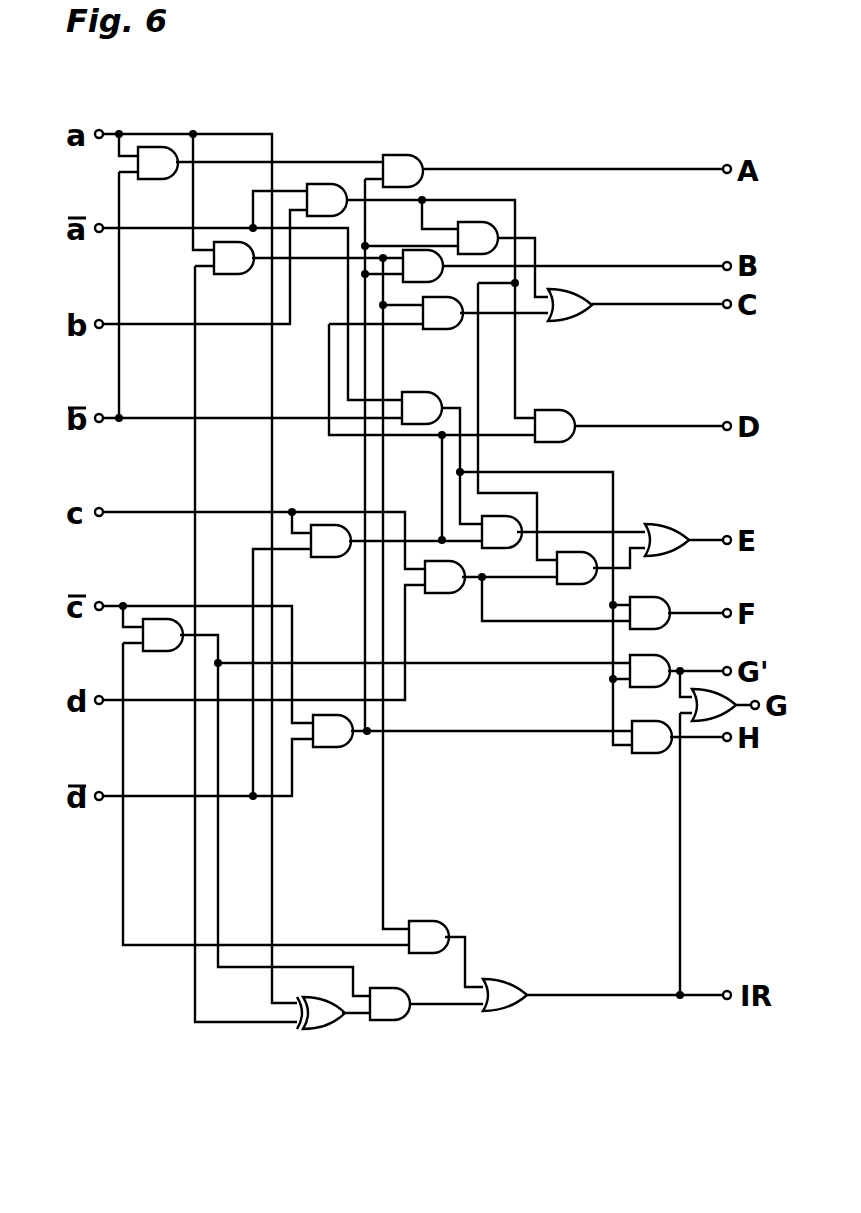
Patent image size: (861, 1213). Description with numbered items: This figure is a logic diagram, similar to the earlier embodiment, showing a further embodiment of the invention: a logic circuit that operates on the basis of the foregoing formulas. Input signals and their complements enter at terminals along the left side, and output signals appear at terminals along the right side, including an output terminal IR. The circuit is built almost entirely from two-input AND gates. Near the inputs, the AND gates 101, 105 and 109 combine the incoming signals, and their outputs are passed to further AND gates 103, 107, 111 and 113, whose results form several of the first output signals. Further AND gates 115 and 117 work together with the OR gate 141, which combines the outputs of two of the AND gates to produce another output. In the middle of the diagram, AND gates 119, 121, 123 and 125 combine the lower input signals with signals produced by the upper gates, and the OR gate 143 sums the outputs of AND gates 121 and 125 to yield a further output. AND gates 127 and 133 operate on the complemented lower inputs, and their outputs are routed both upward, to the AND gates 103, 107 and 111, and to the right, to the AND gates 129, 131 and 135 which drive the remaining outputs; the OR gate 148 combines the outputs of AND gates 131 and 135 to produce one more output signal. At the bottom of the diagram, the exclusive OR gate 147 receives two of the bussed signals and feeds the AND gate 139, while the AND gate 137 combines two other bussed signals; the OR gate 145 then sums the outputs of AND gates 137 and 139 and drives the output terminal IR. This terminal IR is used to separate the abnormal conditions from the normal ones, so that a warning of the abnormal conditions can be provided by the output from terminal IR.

The AND gate 101 is at (152, 155).
The AND gate 103 is at (400, 163).
The AND gate 105 is at (322, 194).
The AND gate 107 is at (479, 231).
The AND gate 109 is at (232, 266).
The AND gate 111 is at (419, 266).
The AND gate 113 is at (440, 322).
The AND gate 115 is at (416, 416).
The AND gate 117 is at (547, 420).
The AND gate 119 is at (330, 549).
The AND gate 121 is at (502, 525).
The AND gate 123 is at (438, 591).
The AND gate 125 is at (572, 572).
The AND gate 127 is at (166, 644).
The AND gate 129 is at (648, 610).
The AND gate 131 is at (648, 666).
The AND gate 133 is at (331, 736).
The AND gate 135 is at (662, 714).
The AND gate 137 is at (429, 932).
The AND gate 139 is at (392, 1010).
The OR gate 141 is at (572, 316).
The OR gate 143 is at (653, 531).
The OR gate 145 is at (506, 1006).
The exclusive OR gate 147 is at (321, 1024).
The OR gate 148 is at (708, 717).